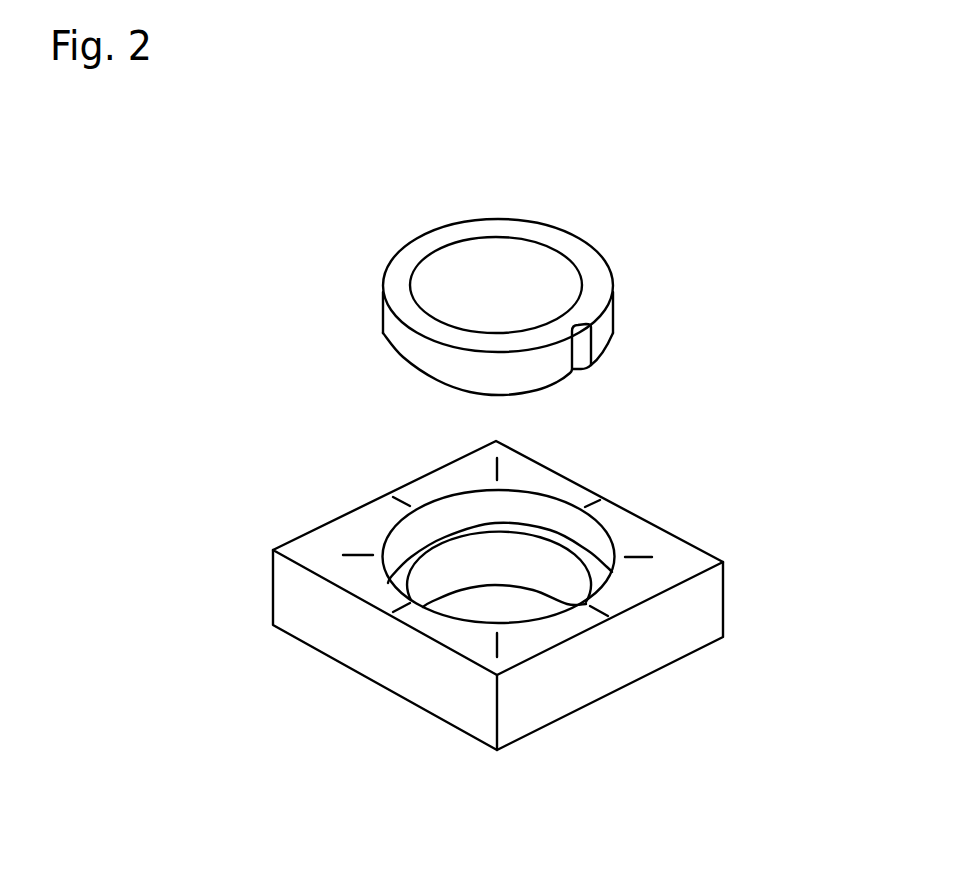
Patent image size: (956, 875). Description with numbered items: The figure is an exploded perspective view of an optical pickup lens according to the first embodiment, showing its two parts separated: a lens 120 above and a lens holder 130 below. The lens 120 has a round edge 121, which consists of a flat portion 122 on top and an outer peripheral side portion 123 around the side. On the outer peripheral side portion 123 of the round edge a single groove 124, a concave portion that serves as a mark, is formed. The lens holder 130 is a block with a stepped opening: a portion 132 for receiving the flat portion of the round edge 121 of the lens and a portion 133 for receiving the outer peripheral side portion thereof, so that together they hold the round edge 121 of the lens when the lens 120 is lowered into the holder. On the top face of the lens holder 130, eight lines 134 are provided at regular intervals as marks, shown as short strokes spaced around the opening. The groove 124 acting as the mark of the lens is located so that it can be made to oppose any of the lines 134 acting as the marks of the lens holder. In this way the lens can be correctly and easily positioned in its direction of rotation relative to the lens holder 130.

The lens 120 is at (599, 316).
The round edge 121 is at (618, 340).
The flat portion 122 is at (590, 248).
The outer peripheral side portion 123 is at (603, 336).
The groove 124 is at (636, 386).
The lens holder 130 is at (544, 585).
The portion for receiving the flat portion 132 is at (393, 567).
The portion for receiving the outer peripheral side portion 133 is at (430, 517).
The lines 134 is at (537, 557).